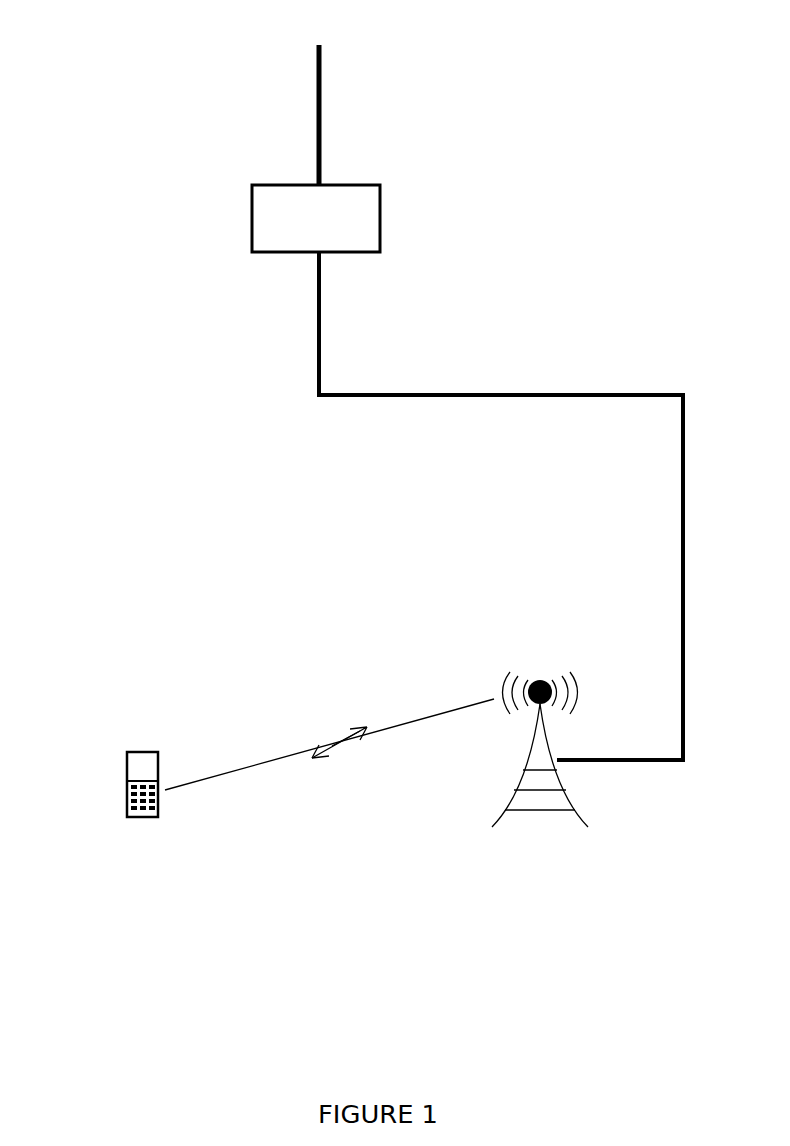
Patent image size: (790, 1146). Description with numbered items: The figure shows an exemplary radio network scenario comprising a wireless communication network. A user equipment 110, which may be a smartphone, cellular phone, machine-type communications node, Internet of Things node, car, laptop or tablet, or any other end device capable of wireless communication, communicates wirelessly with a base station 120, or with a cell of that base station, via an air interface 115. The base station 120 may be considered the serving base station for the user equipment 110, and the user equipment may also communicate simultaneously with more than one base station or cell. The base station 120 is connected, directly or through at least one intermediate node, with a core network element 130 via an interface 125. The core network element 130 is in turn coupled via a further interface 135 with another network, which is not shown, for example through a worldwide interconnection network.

The user equipment 110 is at (147, 818).
The air interface 115 is at (228, 748).
The base station 120 is at (573, 793).
The interface 125 is at (423, 385).
The core network element 130 is at (348, 234).
The interface 135 is at (320, 117).